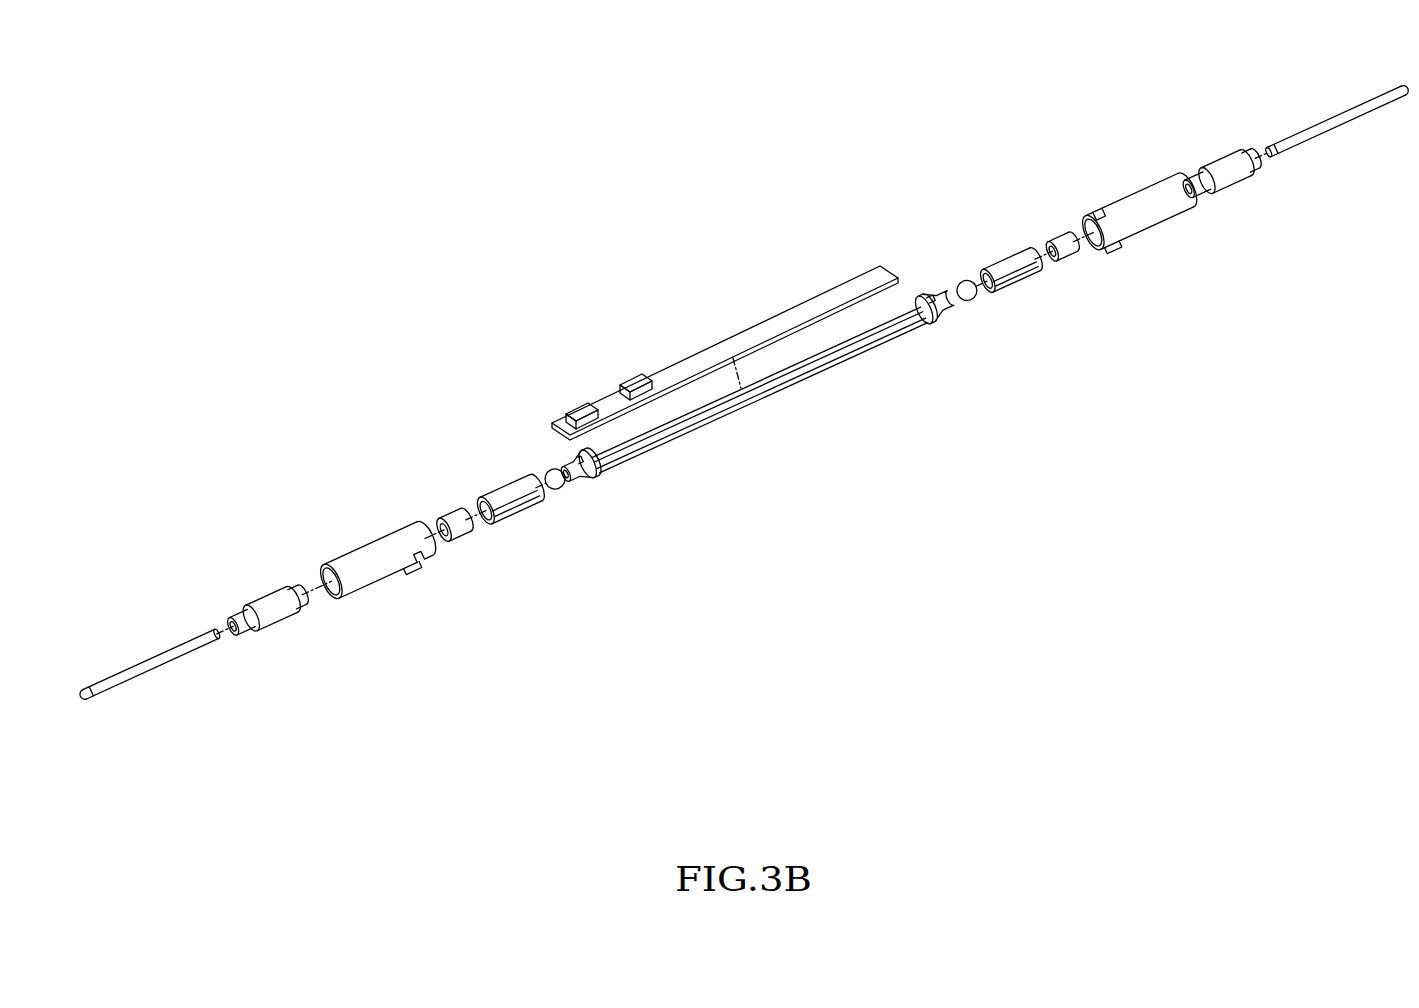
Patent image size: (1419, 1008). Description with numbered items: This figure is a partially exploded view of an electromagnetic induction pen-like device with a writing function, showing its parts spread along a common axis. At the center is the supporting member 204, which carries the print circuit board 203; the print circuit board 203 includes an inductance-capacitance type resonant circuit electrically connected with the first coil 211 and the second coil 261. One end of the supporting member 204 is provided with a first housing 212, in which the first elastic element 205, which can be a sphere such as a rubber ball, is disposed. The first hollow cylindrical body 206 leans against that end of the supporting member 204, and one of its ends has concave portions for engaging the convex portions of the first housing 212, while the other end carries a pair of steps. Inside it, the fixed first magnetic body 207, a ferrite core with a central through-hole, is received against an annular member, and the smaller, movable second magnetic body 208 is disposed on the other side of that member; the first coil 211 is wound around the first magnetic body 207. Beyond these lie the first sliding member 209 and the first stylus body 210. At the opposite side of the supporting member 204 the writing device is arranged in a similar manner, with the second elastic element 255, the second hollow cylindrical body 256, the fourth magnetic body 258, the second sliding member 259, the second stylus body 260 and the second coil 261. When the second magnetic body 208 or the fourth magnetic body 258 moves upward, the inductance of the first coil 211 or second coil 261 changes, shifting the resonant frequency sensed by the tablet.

The print circuit board 203 is at (720, 350).
The supporting member 204 is at (767, 391).
The first elastic element 205 is at (560, 490).
The first hollow cylindrical body 206 is at (372, 576).
The first magnetic body 207 is at (245, 633).
The second magnetic body 208 is at (458, 531).
The first sliding member 209 is at (503, 493).
The first stylus body 210 is at (100, 694).
The first coil 211 is at (278, 618).
The first housing 212 is at (601, 481).
The second elastic element 255 is at (960, 282).
The second hollow cylindrical body 256 is at (1128, 197).
The fourth magnetic body 258 is at (1058, 235).
The second sliding member 259 is at (1020, 250).
The second stylus body 260 is at (1333, 118).
The second coil 261 is at (1223, 158).